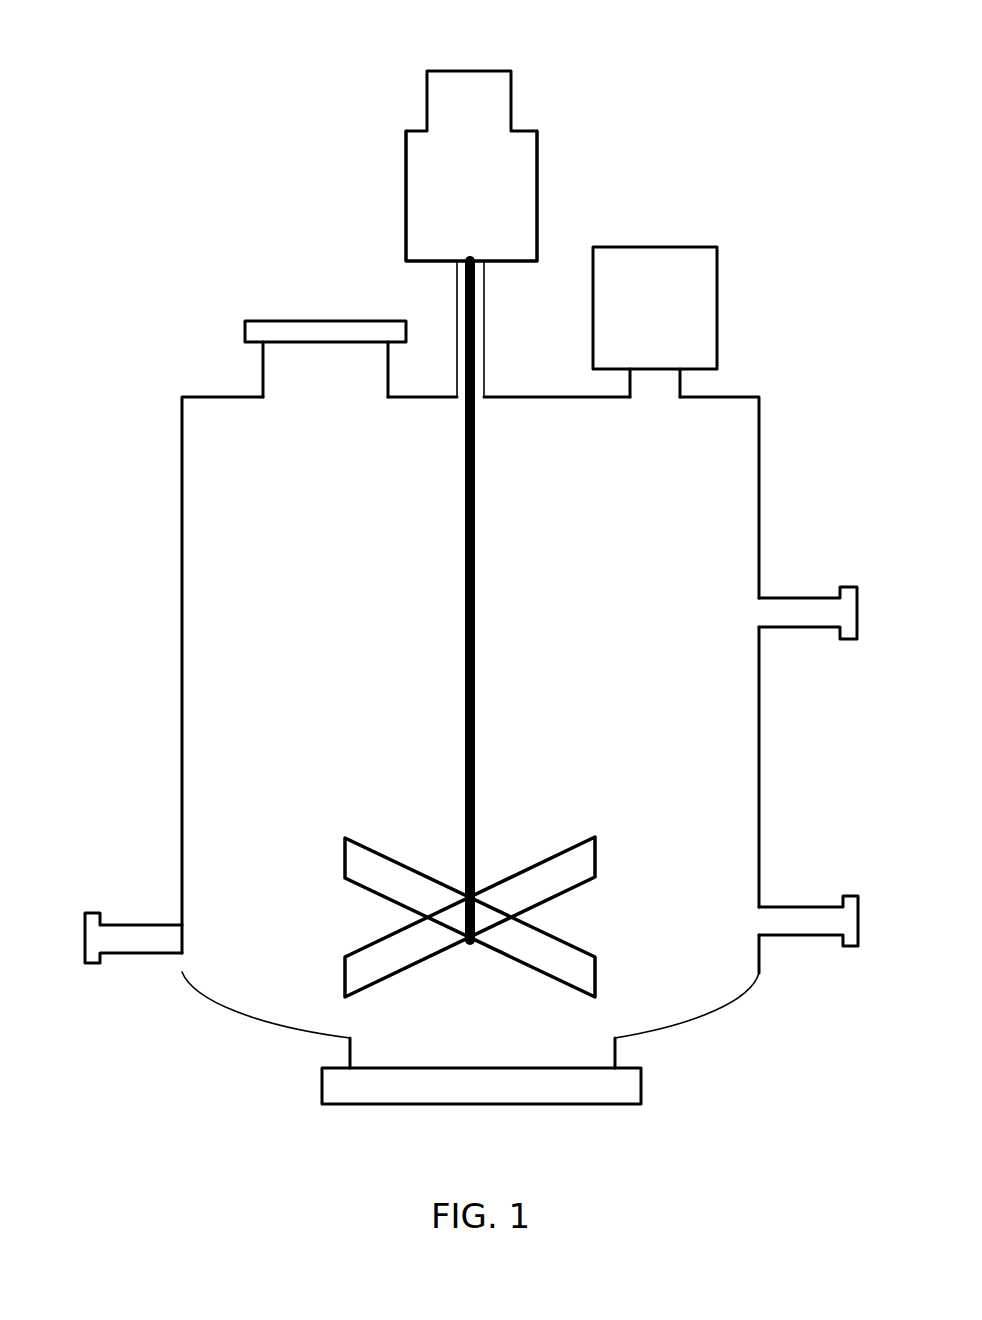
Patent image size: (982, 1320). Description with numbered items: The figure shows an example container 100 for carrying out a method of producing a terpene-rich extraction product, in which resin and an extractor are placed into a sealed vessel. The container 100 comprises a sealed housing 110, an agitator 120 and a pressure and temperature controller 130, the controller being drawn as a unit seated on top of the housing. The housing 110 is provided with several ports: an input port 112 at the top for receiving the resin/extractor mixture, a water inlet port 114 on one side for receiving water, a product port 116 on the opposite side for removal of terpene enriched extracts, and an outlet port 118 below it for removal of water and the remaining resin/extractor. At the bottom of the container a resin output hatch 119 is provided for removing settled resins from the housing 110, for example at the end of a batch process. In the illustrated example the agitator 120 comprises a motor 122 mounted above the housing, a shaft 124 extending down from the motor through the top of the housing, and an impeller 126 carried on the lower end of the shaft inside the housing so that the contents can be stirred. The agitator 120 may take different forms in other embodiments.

The container 100 is at (176, 114).
The sealed housing 110 is at (181, 462).
The input port 112 is at (250, 322).
The water inlet port 114 is at (144, 925).
The product port 116 is at (849, 587).
The outlet port 118 is at (848, 896).
The resin output hatch 119 is at (636, 1092).
The agitator 120 is at (396, 92).
The motor 122 is at (537, 157).
The shaft 124 is at (475, 487).
The impeller 126 is at (580, 861).
The pressure and temperature controller 130 is at (732, 237).